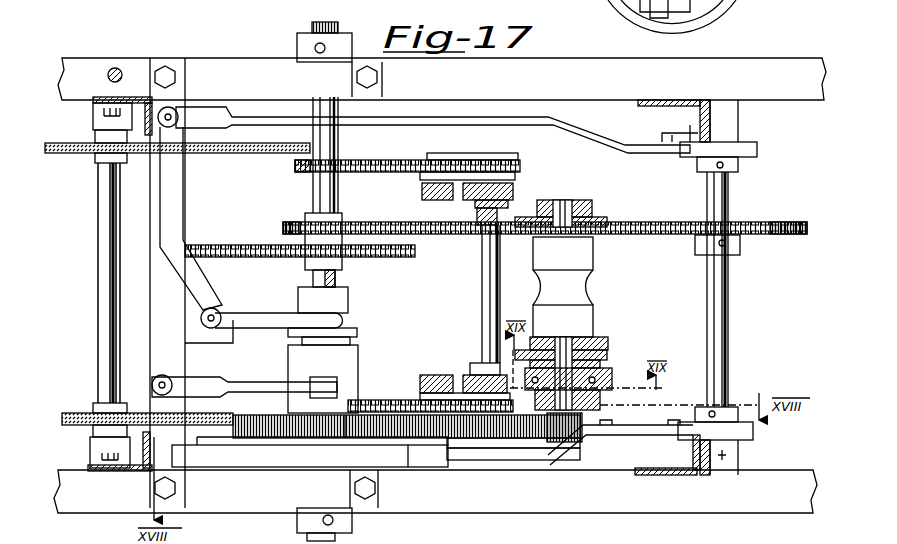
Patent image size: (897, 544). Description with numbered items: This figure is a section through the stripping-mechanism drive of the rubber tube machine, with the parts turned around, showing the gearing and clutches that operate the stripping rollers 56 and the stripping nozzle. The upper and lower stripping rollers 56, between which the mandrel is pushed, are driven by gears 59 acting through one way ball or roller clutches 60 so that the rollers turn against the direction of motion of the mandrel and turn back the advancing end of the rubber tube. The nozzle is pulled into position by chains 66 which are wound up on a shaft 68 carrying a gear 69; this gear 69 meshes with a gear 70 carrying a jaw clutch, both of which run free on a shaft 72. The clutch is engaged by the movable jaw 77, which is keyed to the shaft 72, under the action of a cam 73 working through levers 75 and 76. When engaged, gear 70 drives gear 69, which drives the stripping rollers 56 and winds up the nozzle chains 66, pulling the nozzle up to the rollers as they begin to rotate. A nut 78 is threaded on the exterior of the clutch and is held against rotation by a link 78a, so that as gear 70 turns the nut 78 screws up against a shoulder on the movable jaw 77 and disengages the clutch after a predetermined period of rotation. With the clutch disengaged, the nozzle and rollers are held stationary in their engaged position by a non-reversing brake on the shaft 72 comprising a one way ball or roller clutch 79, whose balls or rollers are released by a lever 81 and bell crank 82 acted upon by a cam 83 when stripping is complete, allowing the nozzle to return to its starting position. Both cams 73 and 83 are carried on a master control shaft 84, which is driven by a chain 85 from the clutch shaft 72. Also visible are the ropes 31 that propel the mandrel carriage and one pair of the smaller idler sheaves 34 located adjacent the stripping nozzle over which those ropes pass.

The ropes 31 is at (45, 153).
The idler sheaves 34 is at (130, 408).
The stripping rollers 56 is at (588, 323).
The gears 59 is at (578, 428).
The one way ball or roller clutches 60 is at (603, 386).
The chains 66 is at (388, 172).
The shaft 68 is at (482, 295).
The gear 69 is at (485, 432).
The gear 70 is at (360, 417).
The shaft 72 is at (336, 279).
The cam 73 is at (757, 150).
The lever 75 is at (555, 127).
The lever 76 is at (183, 217).
The movable jaw 77 is at (348, 300).
The nut 78 is at (352, 362).
The link 78a is at (236, 330).
The one way ball or roller clutch 79 is at (383, 458).
The lever 81 is at (545, 458).
The bell crank 82 is at (633, 437).
The cam 83 is at (753, 432).
The master control shaft 84 is at (728, 332).
The chain 85 is at (656, 235).